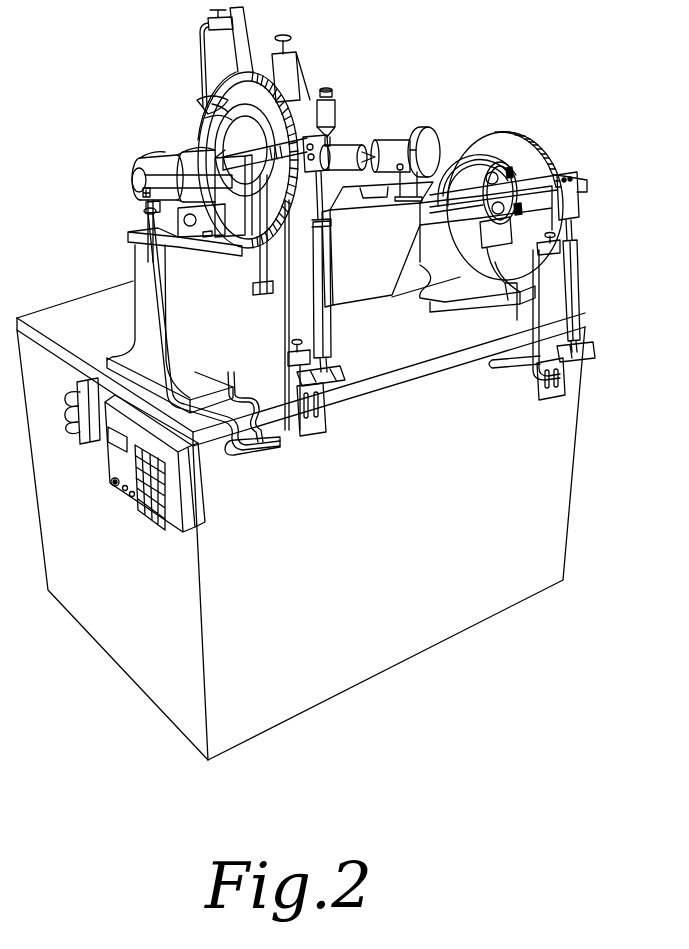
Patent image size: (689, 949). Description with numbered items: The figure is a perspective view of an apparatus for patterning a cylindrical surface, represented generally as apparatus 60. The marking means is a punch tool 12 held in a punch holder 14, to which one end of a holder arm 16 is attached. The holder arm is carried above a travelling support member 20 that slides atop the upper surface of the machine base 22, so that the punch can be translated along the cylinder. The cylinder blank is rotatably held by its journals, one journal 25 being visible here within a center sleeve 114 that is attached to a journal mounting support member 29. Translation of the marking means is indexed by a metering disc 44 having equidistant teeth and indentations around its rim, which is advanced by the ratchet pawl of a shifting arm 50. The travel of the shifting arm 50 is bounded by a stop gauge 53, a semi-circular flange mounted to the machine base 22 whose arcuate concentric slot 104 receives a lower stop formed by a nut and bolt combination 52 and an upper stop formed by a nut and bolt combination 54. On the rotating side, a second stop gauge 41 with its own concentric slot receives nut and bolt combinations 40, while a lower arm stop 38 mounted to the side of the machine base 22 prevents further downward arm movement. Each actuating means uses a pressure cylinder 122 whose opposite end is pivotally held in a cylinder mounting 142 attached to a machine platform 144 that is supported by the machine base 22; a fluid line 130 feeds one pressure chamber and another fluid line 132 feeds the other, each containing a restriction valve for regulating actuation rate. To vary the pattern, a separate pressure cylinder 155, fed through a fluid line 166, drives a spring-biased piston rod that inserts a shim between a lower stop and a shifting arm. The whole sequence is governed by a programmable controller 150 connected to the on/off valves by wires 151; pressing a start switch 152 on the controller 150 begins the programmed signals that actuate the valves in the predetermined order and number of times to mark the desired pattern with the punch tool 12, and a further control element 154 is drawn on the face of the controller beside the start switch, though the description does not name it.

The apparatus for patterning a cylindrical surface 60 is at (110, 131).
The arcuate concentric slot 104 is at (206, 100).
The second stop gauge 41 is at (205, 118).
The nut and bolt combinations 40 is at (215, 132).
The pressure cylinder 155 is at (143, 193).
The fluid line 166 is at (146, 263).
The lower arm stop 38 is at (252, 160).
The holder arm 16 is at (312, 100).
The punch holder 14 is at (333, 100).
The punch tool 12 is at (334, 132).
The journal 25 is at (370, 145).
The center sleeve 114 is at (393, 145).
The journal mounting support member 29 is at (425, 135).
The stop gauge 53 is at (470, 160).
The metering disc 44 is at (492, 138).
The nut and bolt combination (upper stop) 54 is at (514, 166).
The nut and bolt combination (lower stop) 52 is at (518, 205).
The shifting arm 50 is at (590, 180).
The pressure cylinder 122 is at (580, 283).
The cylinder mounting 142 is at (588, 355).
The machine platform 144 is at (592, 368).
The travelling support member 20 is at (362, 292).
The machine base 22 is at (430, 278).
The fluid line 130 is at (285, 328).
The fluid line 132 is at (288, 366).
The programmable controller 150 is at (108, 468).
The wires 151 is at (62, 400).
The start switch 152 is at (113, 488).
The indicator button 154 is at (130, 498).